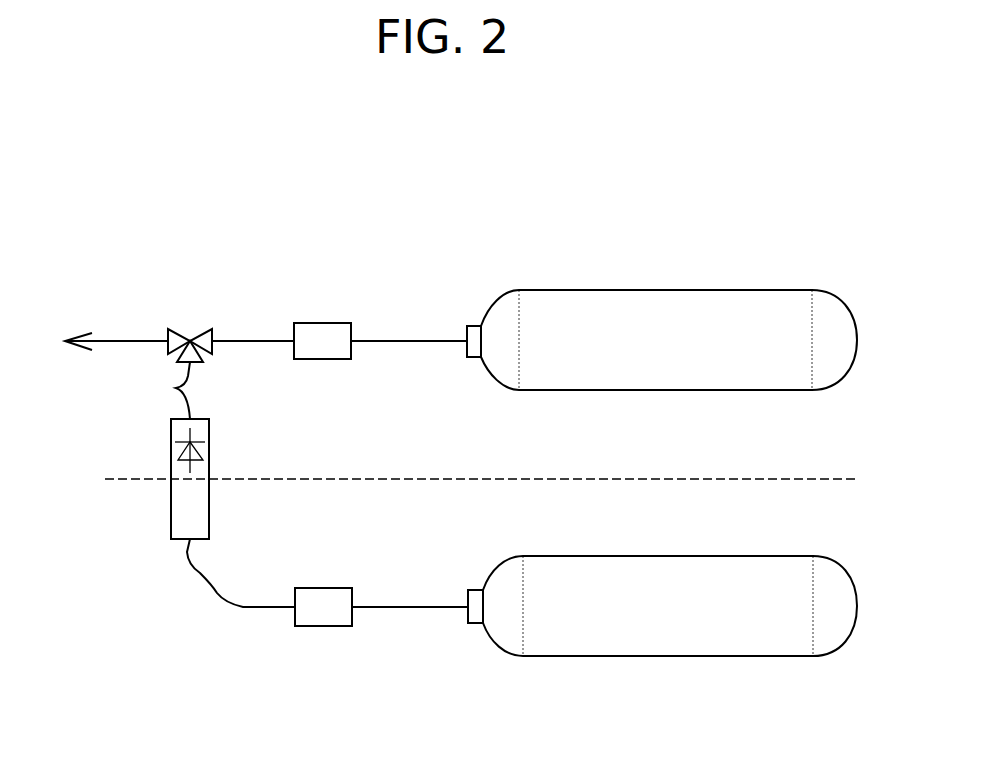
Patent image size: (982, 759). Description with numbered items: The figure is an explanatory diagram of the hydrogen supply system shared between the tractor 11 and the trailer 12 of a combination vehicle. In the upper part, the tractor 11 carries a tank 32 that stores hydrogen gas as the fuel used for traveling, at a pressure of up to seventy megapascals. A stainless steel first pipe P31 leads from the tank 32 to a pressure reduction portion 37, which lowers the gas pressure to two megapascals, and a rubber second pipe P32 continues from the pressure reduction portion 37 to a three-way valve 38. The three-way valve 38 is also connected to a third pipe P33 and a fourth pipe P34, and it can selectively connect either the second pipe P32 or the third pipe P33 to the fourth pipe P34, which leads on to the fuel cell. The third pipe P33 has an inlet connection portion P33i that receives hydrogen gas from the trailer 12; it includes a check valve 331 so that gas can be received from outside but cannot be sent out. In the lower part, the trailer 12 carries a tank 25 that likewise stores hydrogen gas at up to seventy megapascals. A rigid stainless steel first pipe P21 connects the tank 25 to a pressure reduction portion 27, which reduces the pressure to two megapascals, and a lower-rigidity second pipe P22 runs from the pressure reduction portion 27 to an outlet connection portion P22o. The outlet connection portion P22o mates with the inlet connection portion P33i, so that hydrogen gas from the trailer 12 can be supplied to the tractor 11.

The tractor 11 is at (662, 316).
The trailer 12 is at (662, 582).
The tank 32 is at (666, 290).
The tank 25 is at (668, 556).
The pressure reduction portion 37 is at (325, 322).
The pressure reduction portion 27 is at (322, 588).
The three-way valve 38 is at (196, 328).
The check valve 331 is at (209, 447).
The first pipe P31 is at (413, 338).
The second pipe P32 is at (250, 338).
The third pipe P33 is at (178, 387).
The fourth pipe P34 is at (113, 338).
The inlet connection portion P33i is at (171, 446).
The outlet connection portion P22o is at (171, 507).
The first pipe P21 is at (413, 604).
The second pipe P22 is at (251, 604).